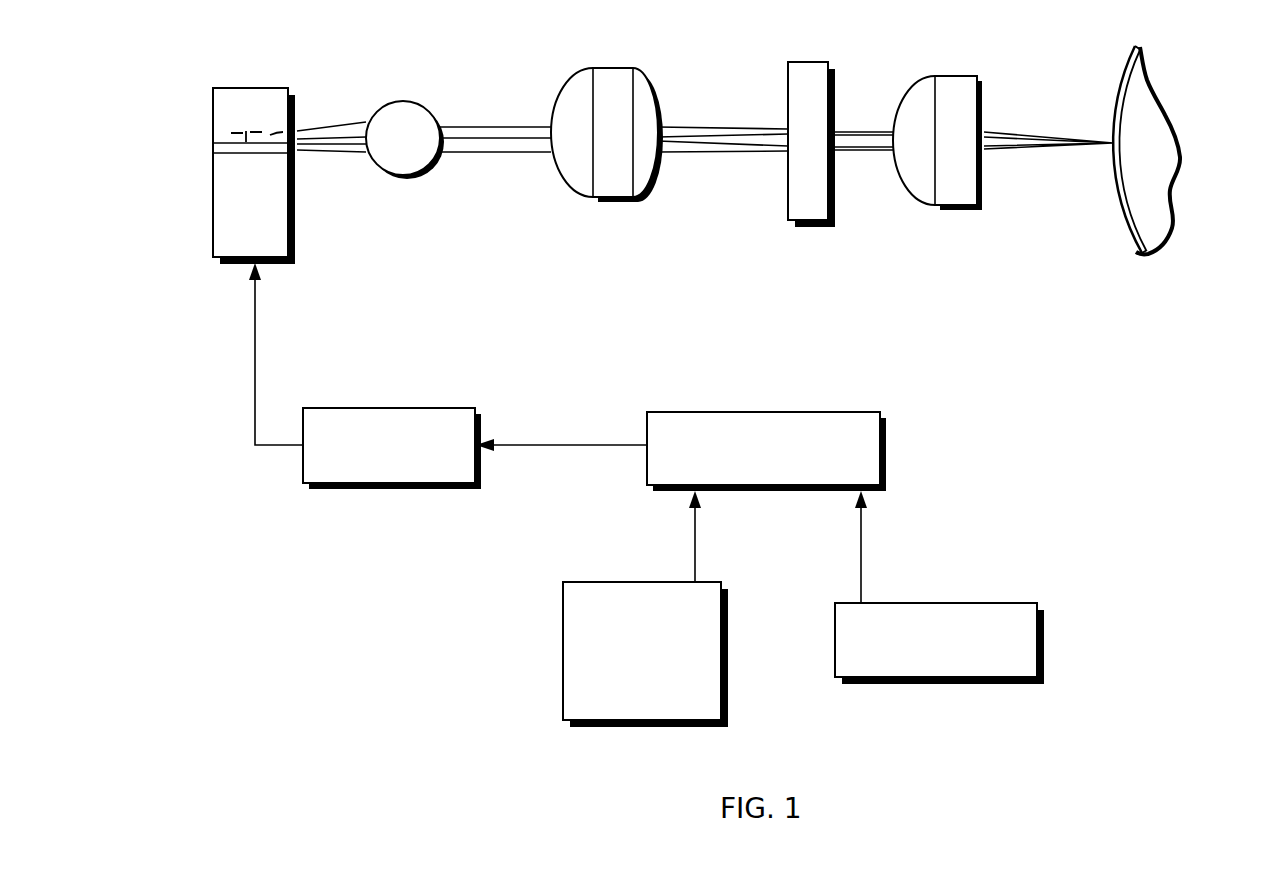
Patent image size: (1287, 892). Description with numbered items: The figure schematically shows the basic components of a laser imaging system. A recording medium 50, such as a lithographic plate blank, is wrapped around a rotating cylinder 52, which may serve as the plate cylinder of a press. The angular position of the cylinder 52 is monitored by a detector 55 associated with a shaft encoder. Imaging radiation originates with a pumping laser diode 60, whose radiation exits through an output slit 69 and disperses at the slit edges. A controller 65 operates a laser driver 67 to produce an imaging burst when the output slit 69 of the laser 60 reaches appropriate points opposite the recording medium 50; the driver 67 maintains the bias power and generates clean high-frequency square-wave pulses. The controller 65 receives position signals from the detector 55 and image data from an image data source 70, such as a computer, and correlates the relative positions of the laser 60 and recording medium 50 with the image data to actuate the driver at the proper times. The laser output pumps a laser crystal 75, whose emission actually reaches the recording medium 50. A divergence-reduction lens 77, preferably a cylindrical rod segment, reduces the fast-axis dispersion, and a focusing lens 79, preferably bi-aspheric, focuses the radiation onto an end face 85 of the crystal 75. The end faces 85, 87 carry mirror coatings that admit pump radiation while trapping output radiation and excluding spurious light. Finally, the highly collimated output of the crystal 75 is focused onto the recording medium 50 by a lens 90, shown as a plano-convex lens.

The recording medium 50 is at (1128, 228).
The cylinder 52 is at (1157, 122).
The detector 55 is at (988, 603).
The pumping laser diode 60 is at (212, 210).
The controller 65 is at (887, 430).
The laser driver 67 is at (402, 408).
The output slit 69 is at (222, 128).
The image data source 70 is at (563, 640).
The laser crystal 75 is at (813, 62).
The divergence-reduction lens 77 is at (386, 102).
The focusing lens 79 is at (620, 68).
The end face 85 is at (786, 198).
The end face 87 is at (835, 210).
The lens 90 is at (958, 76).